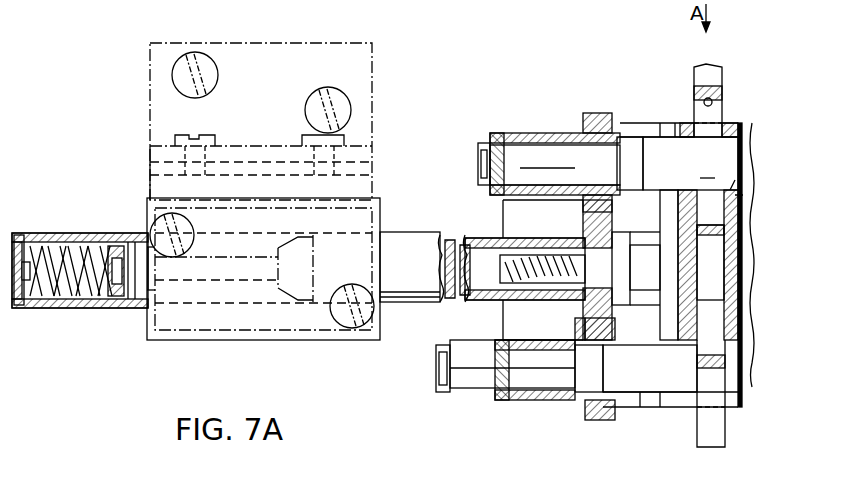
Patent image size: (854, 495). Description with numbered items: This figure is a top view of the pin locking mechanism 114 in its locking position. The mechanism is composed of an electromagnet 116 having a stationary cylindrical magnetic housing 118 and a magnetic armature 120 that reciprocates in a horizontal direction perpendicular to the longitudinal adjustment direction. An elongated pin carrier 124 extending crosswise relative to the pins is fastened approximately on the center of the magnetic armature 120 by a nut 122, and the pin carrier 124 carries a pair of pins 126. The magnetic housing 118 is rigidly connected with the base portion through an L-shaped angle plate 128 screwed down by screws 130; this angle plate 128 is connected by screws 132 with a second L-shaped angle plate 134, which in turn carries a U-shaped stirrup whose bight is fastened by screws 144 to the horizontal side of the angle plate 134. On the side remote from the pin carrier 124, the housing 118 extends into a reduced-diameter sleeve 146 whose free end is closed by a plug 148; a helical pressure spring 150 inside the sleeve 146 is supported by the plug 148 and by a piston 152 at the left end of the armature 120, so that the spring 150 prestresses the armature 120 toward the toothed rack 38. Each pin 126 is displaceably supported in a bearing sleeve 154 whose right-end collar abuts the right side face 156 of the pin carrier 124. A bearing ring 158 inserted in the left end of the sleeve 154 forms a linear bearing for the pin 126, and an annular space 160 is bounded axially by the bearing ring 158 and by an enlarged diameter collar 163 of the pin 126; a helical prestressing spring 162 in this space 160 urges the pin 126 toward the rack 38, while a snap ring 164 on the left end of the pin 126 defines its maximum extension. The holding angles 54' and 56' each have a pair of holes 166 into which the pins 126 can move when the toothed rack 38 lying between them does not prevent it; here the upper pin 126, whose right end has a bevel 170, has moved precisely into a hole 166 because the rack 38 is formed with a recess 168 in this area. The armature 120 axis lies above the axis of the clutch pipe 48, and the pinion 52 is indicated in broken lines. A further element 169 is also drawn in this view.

The pin locking mechanism 114 is at (404, 104).
The electromagnet 116 is at (258, 322).
The cylindrical magnetic housing 118 is at (263, 269).
The magnetic armature 120 is at (410, 243).
The nut 122 is at (586, 318).
The pin carrier 124 is at (595, 420).
The pin 126 is at (630, 150).
The L-shaped angle plate 128 is at (267, 43).
The screws 130 is at (208, 54).
The screws 132 is at (290, 132).
The second L-shaped angle plate 134 is at (150, 190).
The screws 144 is at (193, 228).
The sleeve 146 is at (91, 233).
The plug 148 is at (14, 233).
The helical pressure spring 150 is at (58, 308).
The piston 152 is at (110, 308).
The bearing sleeve 154 is at (610, 113).
The right side face 156 is at (612, 245).
The bearing ring 158 is at (498, 133).
The annular space 160 is at (545, 135).
The helical prestressing spring 162 is at (518, 135).
The enlarged diameter collar 163 is at (644, 194).
The snap ring 164 is at (479, 195).
The holes 166 is at (748, 180).
The recess 168 is at (708, 76).
The pin 169 is at (706, 420).
The bevel 170 is at (745, 188).
The toothed rack 38 is at (718, 98).
The clutch pipe 48 is at (458, 295).
The pinion 52 is at (708, 300).
The holding angle 54' is at (741, 104).
The holding angle 56' is at (677, 105).